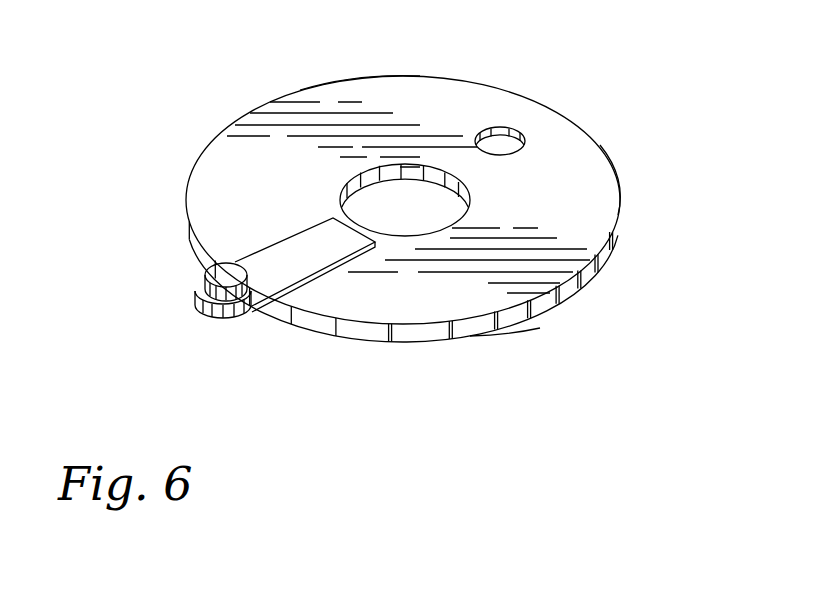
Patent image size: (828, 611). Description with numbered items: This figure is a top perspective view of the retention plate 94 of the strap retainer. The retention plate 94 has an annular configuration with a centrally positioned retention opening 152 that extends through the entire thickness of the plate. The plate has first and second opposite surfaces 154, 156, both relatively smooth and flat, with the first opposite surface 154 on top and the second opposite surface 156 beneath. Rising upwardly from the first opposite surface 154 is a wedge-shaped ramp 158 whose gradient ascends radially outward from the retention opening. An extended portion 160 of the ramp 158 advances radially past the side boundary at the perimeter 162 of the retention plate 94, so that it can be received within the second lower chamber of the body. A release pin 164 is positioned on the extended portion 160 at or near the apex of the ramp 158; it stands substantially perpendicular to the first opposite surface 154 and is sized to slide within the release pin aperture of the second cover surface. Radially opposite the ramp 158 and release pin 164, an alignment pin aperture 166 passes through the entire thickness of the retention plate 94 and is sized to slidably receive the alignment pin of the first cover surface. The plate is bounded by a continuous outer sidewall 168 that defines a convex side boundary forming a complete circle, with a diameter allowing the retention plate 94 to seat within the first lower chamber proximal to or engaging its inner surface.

The retention plate 94 is at (350, 80).
The retention opening 152 is at (418, 191).
The first opposite surface 154 is at (593, 178).
The second opposite surface 156 is at (512, 324).
The wedge-shaped ramp 158 is at (290, 278).
The extended portion 160 is at (218, 316).
The perimeter 162 is at (616, 188).
The release pin 164 is at (218, 276).
The alignment pin aperture 166 is at (507, 128).
The outer sidewall 168 is at (607, 258).